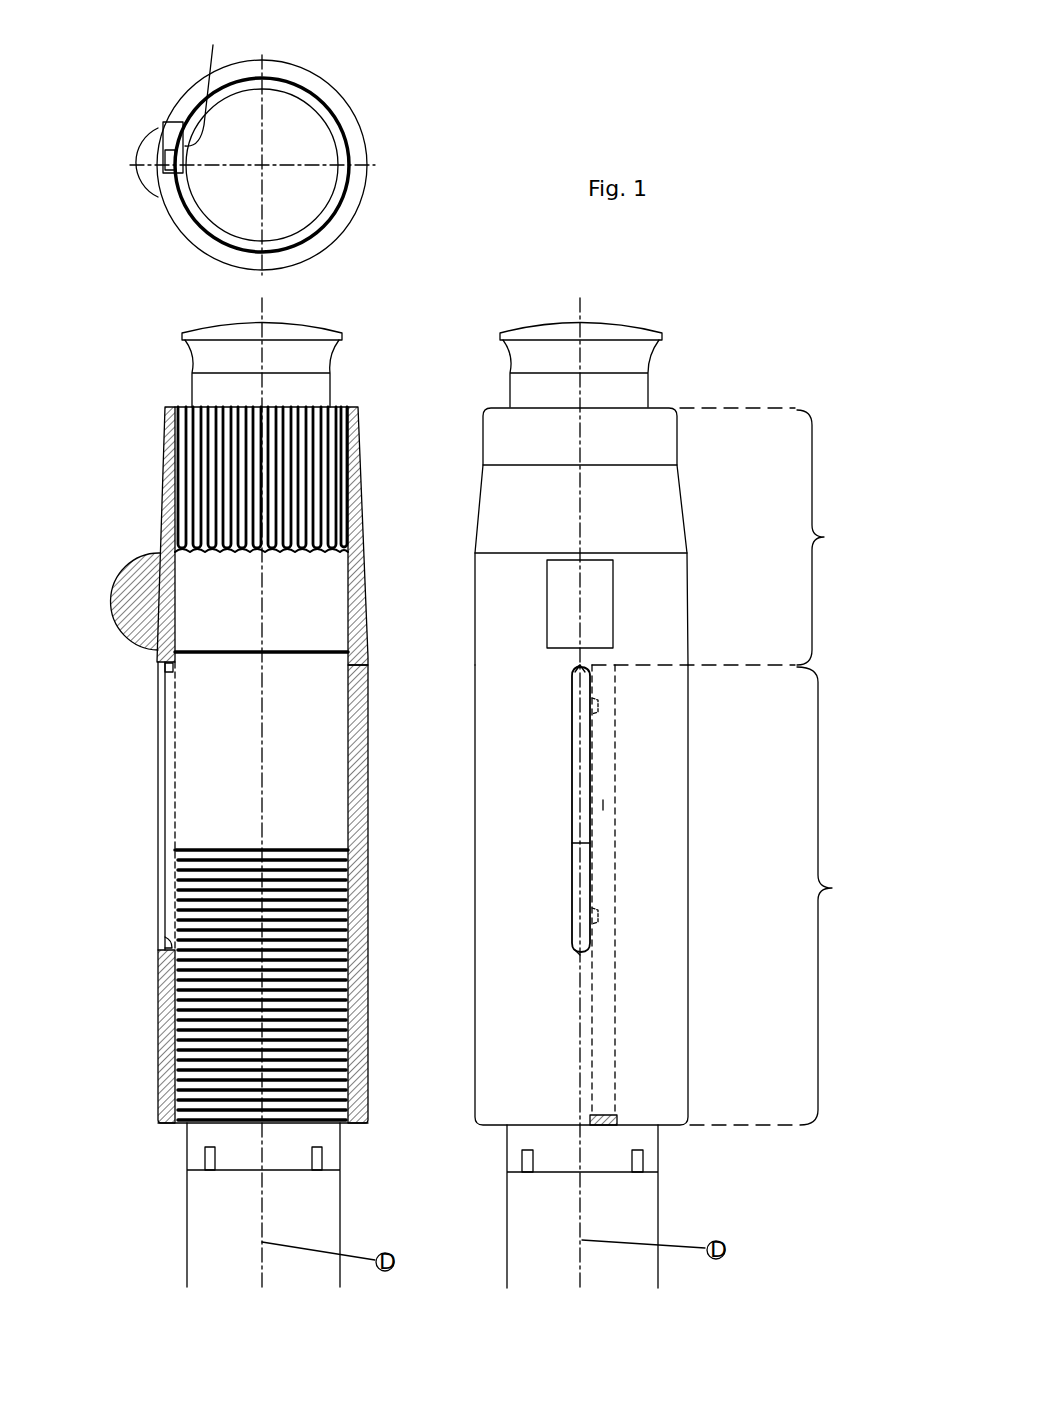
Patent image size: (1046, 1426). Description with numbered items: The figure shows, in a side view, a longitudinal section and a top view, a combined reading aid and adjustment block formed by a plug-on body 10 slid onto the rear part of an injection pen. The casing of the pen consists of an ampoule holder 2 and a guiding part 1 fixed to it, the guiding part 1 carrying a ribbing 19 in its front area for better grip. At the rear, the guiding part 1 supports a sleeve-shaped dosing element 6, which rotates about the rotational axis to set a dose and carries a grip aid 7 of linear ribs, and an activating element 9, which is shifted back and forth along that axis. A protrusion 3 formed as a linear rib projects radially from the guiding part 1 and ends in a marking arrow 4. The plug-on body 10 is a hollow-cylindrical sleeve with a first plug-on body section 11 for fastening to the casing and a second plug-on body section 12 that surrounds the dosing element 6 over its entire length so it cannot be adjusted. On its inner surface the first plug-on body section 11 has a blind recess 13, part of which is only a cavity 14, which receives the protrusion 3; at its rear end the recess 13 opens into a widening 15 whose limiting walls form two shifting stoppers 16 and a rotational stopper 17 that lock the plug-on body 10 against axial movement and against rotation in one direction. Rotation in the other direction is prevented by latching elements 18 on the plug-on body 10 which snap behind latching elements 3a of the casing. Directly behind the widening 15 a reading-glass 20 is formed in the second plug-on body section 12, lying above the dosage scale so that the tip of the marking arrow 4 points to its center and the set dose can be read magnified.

The guiding part 1 is at (345, 157).
The ampoule holder 2 is at (310, 195).
The protrusion 3 is at (175, 768).
The latching elements 3a is at (596, 700).
The marking arrow 4 is at (580, 668).
The dosing element 6 is at (215, 610).
The grip aid 7 is at (175, 407).
The activating element 9 is at (300, 327).
The plug-on body 10 is at (378, 398).
The first plug-on body section 11 is at (340, 107).
The second plug-on body section 12 is at (165, 443).
The recess 13 is at (715, 1065).
The cavity 14 is at (603, 805).
The widening 15 is at (162, 813).
The shifting stoppers 16 is at (165, 670).
The rotational stopper 17 is at (570, 843).
The latching elements 18 is at (175, 125).
The ribbing 19 is at (183, 1128).
The reading-glass 20 is at (140, 143).